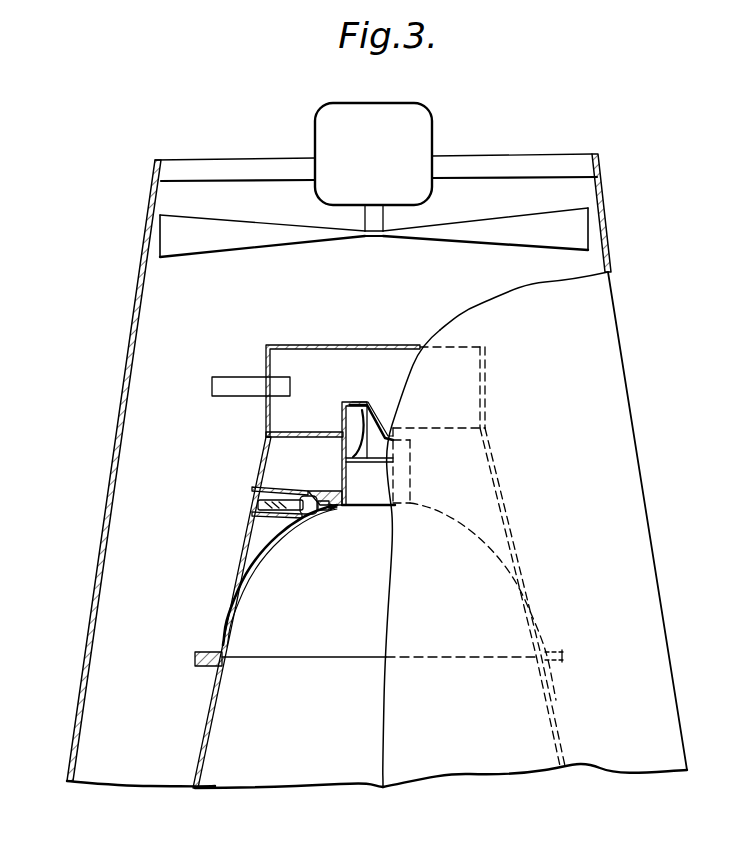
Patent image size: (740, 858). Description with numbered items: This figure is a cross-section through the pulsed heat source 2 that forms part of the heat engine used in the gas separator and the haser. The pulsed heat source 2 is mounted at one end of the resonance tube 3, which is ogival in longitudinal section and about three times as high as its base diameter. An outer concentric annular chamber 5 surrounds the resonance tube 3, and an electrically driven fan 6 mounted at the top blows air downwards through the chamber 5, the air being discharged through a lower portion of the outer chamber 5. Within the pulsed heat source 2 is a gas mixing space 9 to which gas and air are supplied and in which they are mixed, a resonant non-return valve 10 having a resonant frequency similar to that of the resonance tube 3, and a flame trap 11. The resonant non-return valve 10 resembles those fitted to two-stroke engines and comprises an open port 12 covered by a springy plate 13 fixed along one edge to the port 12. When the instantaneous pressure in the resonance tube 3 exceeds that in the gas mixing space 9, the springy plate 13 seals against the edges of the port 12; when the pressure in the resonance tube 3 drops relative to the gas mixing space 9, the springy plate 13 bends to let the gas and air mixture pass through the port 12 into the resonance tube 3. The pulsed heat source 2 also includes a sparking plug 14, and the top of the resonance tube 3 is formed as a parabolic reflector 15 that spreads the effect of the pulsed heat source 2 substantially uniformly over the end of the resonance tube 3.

The pulsed heat source 2 is at (250, 363).
The resonance tube 3 is at (203, 762).
The outer concentric annular chamber 5 is at (100, 688).
The electrically driven fan 6 is at (578, 233).
The gas mixing space 9 is at (316, 358).
The resonant non-return valve 10 is at (368, 392).
The flame trap 11 is at (352, 469).
The open port 12 is at (376, 422).
The springy plate 13 is at (352, 426).
The sparking plug 14 is at (268, 496).
The parabolic reflector 15 is at (256, 558).